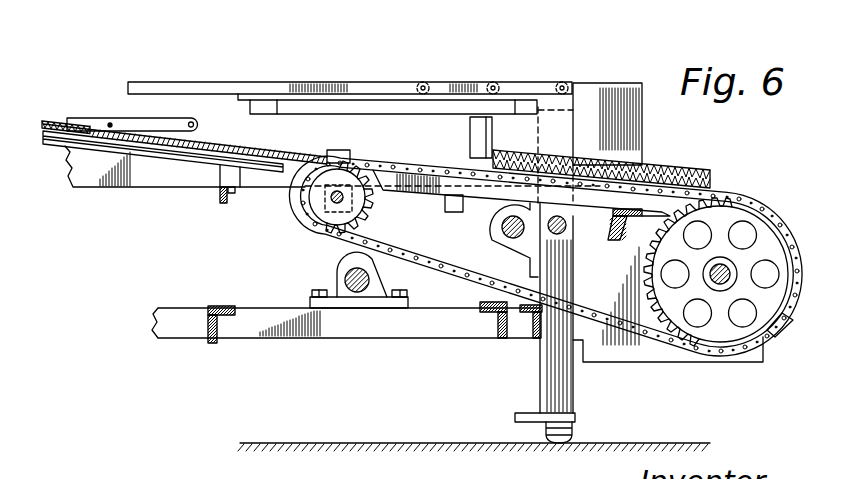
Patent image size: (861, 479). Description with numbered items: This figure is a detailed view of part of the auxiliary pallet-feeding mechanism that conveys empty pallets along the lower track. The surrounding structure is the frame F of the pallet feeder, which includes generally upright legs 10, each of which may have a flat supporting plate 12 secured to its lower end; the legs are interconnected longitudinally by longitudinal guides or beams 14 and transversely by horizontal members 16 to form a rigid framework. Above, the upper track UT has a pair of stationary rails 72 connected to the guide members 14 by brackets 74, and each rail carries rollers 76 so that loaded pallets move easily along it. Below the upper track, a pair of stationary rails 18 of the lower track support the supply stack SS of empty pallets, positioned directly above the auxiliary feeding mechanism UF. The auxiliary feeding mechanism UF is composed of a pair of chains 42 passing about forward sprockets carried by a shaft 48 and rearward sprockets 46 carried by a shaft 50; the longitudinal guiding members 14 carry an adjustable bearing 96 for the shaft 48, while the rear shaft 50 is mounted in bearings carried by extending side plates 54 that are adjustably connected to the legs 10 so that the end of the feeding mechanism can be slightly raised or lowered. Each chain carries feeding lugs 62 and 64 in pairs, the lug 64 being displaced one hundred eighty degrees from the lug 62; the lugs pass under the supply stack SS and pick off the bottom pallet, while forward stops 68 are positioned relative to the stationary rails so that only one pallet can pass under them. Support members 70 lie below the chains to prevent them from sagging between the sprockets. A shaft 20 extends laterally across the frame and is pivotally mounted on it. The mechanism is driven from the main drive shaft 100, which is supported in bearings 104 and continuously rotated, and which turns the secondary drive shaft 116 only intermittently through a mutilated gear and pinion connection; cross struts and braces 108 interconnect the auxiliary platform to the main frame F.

The legs 10 is at (550, 377).
The flat supporting plate 12 is at (515, 417).
The longitudinal guides or beams 14 is at (160, 177).
The horizontal members 16 is at (527, 334).
The stationary rails 18 is at (60, 143).
The shaft 20 is at (566, 231).
The chains 42 is at (440, 265).
The rearward sprockets 46 is at (760, 234).
The shaft 48 is at (330, 193).
The shaft 50 is at (718, 285).
The side plates 54 is at (667, 355).
The feeding lug 62 is at (346, 152).
The feeding lug 64 is at (777, 332).
The forward stops 68 is at (493, 130).
The support members 70 is at (427, 197).
The stationary rails 72 is at (345, 90).
The brackets 74 is at (262, 106).
The rollers 76 is at (493, 81).
The adjustable bearing 96 is at (330, 208).
The main drive shaft 100 is at (346, 274).
The bearings 104 is at (336, 283).
The cross struts and braces 108 is at (207, 334).
The secondary drive shaft 116 is at (512, 234).
The upper track UT is at (390, 79).
The supply stack SS is at (682, 166).
The auxiliary feeding mechanism UF is at (781, 208).
The frame F is at (573, 398).